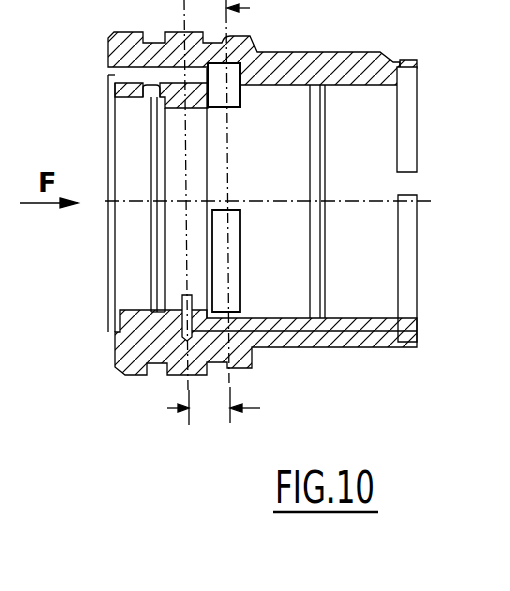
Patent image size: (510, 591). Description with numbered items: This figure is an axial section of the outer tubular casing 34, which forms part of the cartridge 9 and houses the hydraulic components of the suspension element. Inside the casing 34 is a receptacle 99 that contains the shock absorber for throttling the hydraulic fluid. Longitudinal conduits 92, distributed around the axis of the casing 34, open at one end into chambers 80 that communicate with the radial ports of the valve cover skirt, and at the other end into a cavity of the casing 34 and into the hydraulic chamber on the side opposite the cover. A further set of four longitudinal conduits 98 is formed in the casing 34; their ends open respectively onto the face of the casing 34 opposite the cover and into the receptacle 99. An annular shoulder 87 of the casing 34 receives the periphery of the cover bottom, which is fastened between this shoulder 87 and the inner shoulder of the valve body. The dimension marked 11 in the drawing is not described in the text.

The tubular casing 34 is at (125, 383).
The longitudinal conduits 92 is at (120, 73).
The receptacle 99 is at (192, 261).
The chambers 80 is at (233, 98).
The annular shoulder 87 is at (215, 107).
The longitudinal conduits 98 is at (278, 332).
The axial dimension 11 is at (169, 226).
The cartridge 9 is at (243, 226).